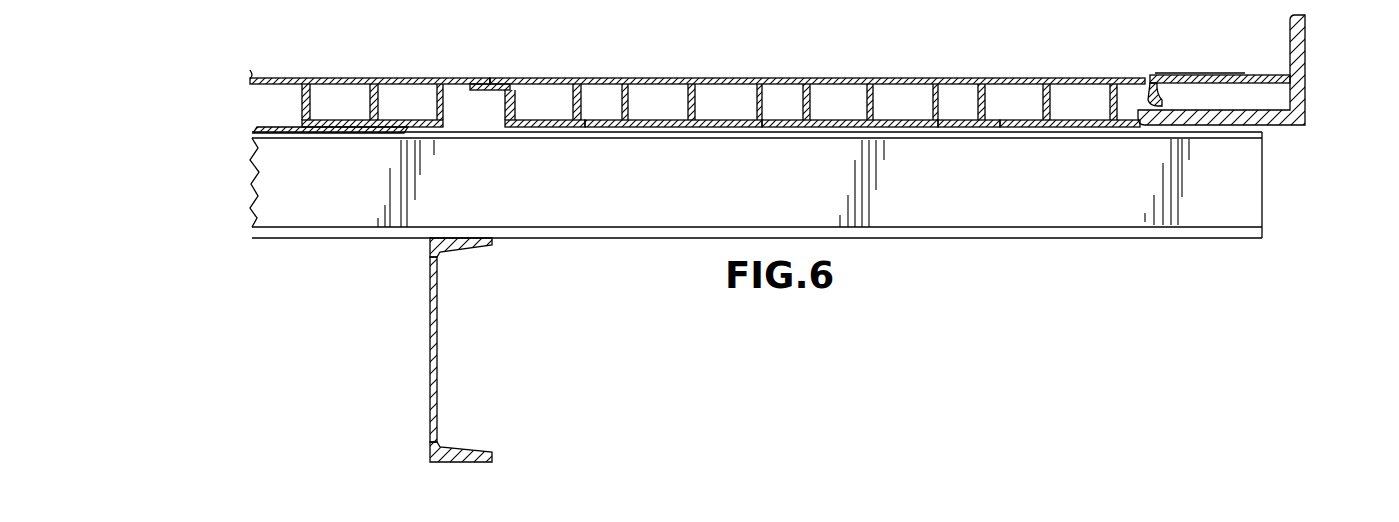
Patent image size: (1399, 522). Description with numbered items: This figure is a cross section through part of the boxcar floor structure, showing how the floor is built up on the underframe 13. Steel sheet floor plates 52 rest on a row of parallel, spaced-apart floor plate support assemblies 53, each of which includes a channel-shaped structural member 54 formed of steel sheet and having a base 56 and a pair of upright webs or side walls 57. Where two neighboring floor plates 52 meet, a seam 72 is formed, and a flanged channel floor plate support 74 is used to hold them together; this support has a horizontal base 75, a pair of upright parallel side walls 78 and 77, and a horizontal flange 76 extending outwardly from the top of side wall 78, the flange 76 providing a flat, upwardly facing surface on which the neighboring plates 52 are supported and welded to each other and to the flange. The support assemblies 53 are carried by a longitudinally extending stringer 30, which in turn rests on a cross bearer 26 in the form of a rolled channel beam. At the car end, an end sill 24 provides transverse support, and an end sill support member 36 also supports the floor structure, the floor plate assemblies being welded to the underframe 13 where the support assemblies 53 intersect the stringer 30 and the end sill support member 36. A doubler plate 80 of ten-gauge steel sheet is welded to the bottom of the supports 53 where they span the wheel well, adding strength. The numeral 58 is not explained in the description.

The underframe 13 is at (1176, 280).
The end sill 24 is at (1305, 48).
The cross bearer 26 is at (437, 350).
The stringer 30 is at (1253, 180).
The end sill support member 36 is at (1255, 75).
The floor plate 52 is at (283, 78).
The floor plate support assembly 53 is at (769, 96).
The structural member 54 is at (800, 123).
The base 56 is at (1043, 125).
The side wall 57 is at (1000, 100).
The intermediate wall 58 is at (1068, 93).
The seam 72 is at (493, 78).
The flanged channel floor plate support 74 is at (585, 96).
The horizontal base 75 is at (548, 127).
The horizontal flange 76 is at (483, 92).
The side wall 77 is at (584, 127).
The side wall 78 is at (515, 105).
The doubler plate 80 is at (272, 127).